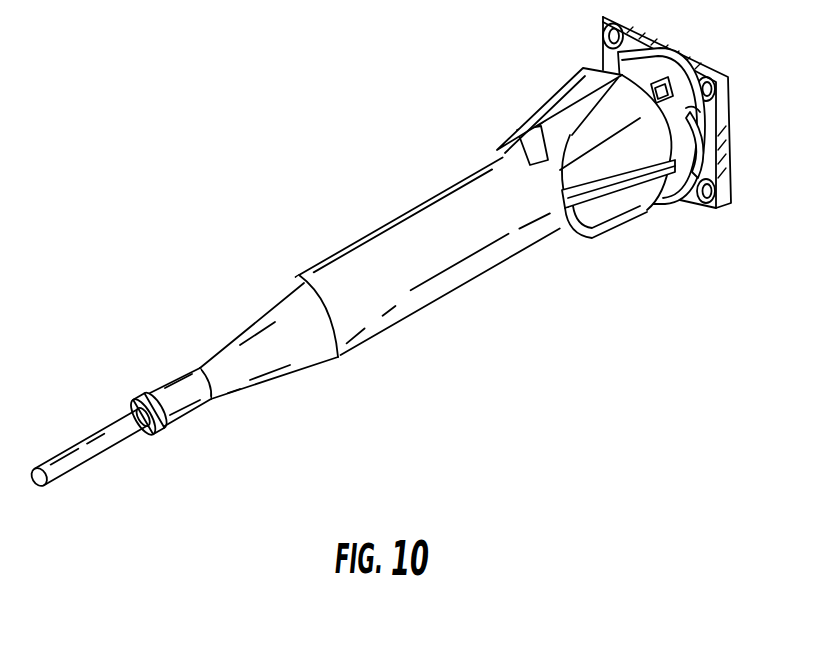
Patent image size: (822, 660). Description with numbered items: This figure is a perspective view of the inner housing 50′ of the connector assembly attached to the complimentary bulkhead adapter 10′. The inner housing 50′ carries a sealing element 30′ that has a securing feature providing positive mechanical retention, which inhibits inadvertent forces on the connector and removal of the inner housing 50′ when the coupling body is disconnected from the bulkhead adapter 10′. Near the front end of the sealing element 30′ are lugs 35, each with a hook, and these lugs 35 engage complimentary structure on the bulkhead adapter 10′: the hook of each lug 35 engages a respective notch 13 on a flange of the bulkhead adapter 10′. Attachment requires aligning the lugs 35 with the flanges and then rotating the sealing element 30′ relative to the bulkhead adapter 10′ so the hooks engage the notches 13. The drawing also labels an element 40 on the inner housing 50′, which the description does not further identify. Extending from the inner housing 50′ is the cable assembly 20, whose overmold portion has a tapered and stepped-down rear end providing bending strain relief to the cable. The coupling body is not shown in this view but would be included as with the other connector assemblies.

The bulkhead adapter 10′ is at (683, 50).
The notch 13 is at (693, 110).
The lug 35 is at (687, 153).
The coupling collar 40 is at (650, 274).
The sealing element 30′ is at (633, 138).
The inner housing 50′ is at (349, 283).
The cable assembly 20 is at (491, 236).